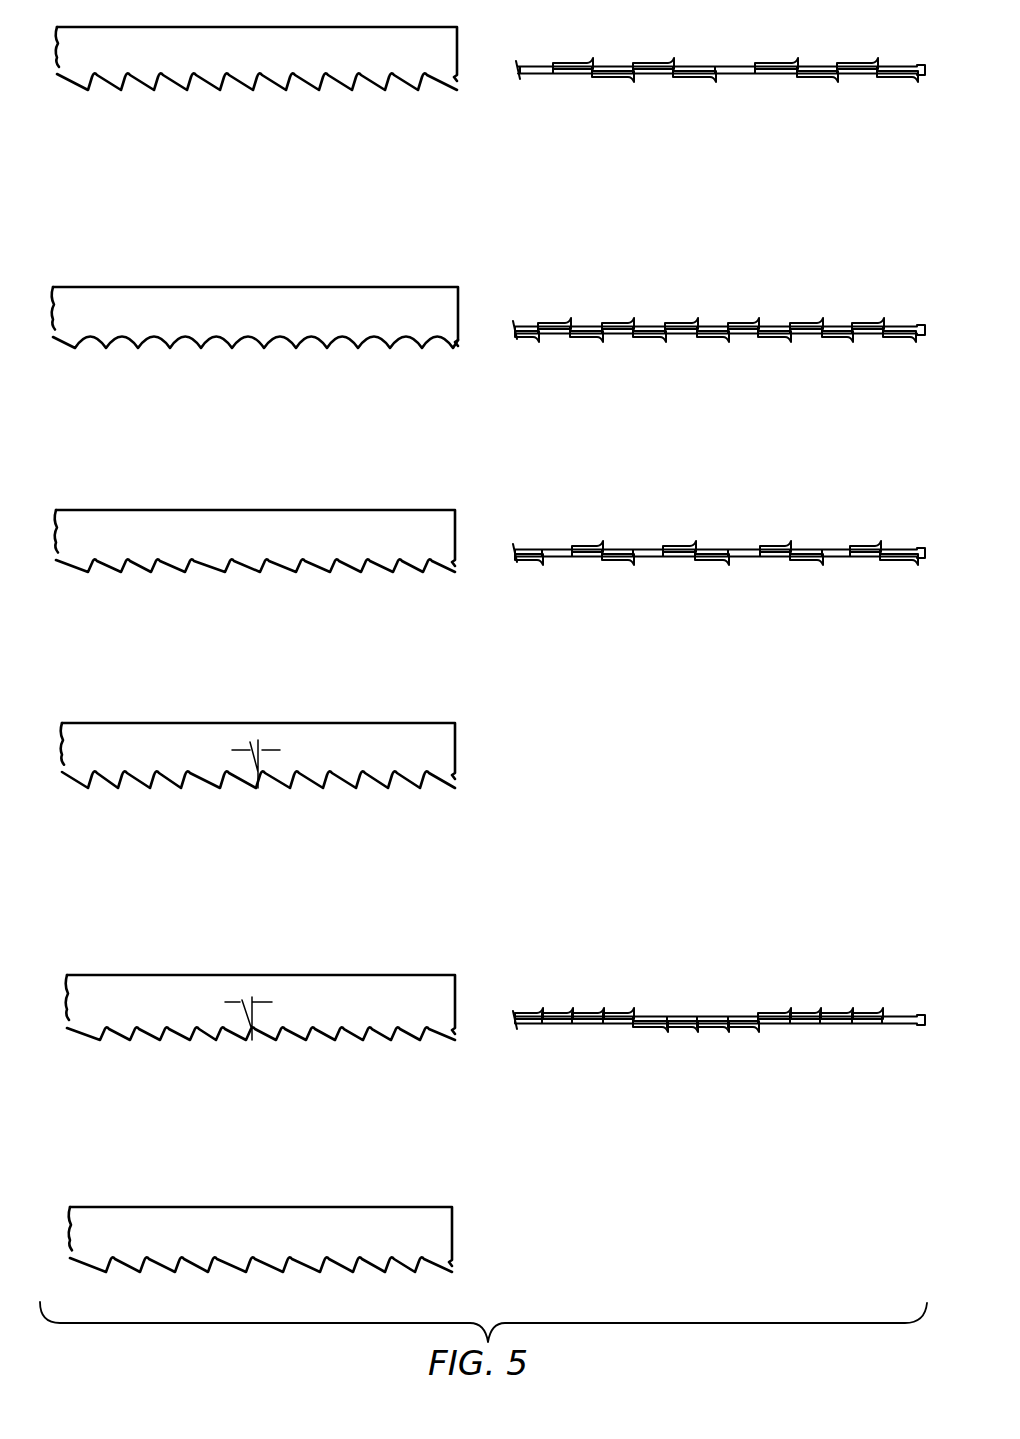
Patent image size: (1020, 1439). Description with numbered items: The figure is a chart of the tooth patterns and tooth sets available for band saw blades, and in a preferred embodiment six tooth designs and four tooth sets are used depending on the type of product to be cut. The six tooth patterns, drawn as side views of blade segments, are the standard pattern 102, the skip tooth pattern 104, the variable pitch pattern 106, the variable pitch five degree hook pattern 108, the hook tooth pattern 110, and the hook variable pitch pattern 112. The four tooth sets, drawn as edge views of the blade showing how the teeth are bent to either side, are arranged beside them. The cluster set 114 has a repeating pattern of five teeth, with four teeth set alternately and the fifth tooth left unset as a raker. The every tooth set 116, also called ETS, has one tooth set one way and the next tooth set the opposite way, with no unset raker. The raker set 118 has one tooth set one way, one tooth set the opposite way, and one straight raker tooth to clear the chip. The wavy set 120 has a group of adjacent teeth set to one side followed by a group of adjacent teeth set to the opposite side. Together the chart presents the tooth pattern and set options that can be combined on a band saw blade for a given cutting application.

The standard pattern 102 is at (417, 27).
The skip tooth pattern 104 is at (417, 287).
The variable pitch pattern 106 is at (408, 510).
The variable pitch 5° hook pattern 108 is at (410, 723).
The hook tooth pattern 110 is at (405, 975).
The hook variable pitch pattern 112 is at (410, 1207).
The cluster set 114 is at (862, 64).
The every tooth set (ETS) 116 is at (863, 327).
The raker set 118 is at (862, 547).
The wavy set 120 is at (865, 1015).